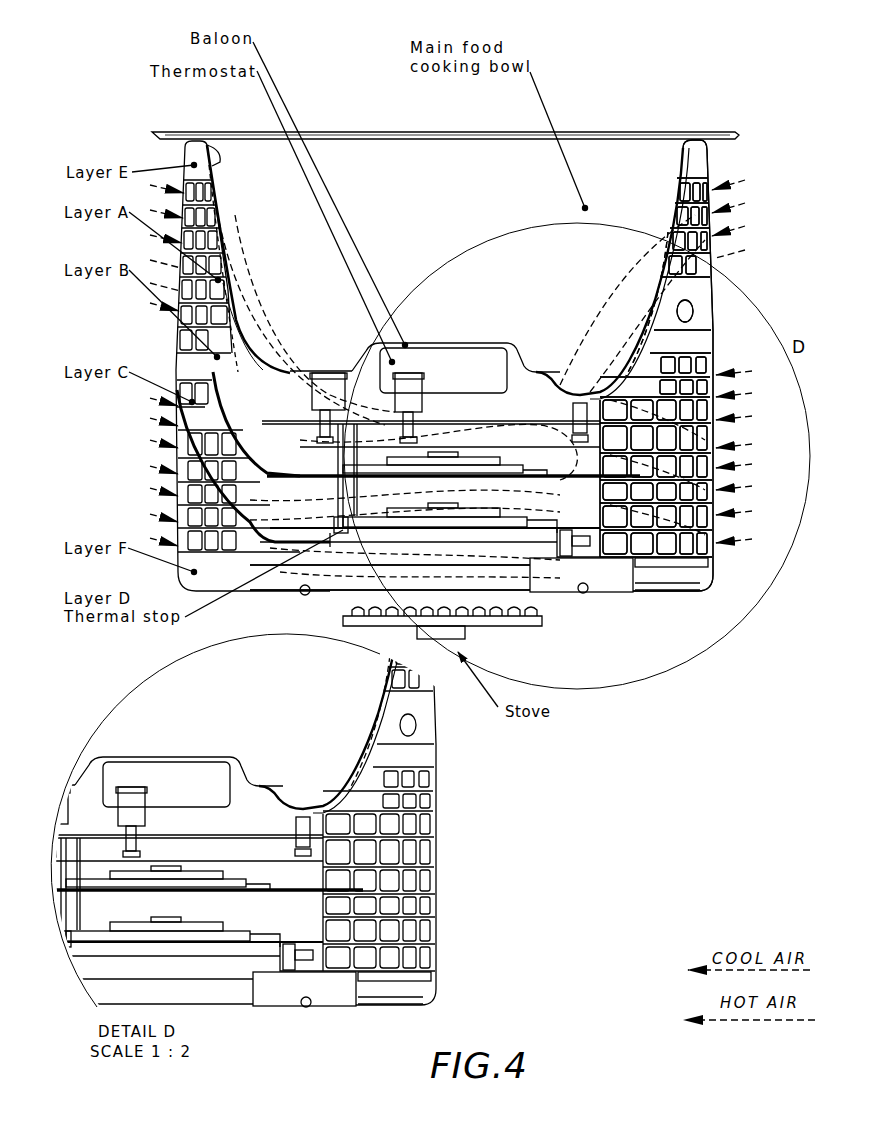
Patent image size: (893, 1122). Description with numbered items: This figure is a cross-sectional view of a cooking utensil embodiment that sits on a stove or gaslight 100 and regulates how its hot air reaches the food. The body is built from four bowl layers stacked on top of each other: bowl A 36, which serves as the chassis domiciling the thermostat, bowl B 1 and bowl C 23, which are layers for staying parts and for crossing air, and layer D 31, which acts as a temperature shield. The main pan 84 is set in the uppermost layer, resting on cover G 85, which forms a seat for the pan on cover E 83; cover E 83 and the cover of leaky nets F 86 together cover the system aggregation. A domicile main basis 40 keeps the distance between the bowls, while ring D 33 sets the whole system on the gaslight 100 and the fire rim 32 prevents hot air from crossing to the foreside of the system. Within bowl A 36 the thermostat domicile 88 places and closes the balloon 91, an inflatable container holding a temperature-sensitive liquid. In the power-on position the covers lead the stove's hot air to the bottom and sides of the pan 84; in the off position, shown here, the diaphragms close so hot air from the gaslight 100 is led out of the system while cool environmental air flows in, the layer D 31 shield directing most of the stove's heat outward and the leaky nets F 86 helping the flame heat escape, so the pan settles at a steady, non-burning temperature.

The bowl B 1 is at (233, 412).
The bowl C 23 is at (248, 485).
The layer D 31 is at (233, 505).
The fire rim 32 is at (612, 582).
The ring D 33 is at (573, 588).
The bowl A 36 is at (265, 392).
The domicile main basis 40 is at (350, 517).
The cover E 83 is at (698, 173).
The main pan 84 is at (403, 135).
The cover G 85 is at (673, 162).
The cover of leaky nets F 86 is at (692, 575).
The thermostat domicile 88 is at (474, 363).
The balloon 91 is at (428, 345).
The gaslight 100 is at (478, 626).